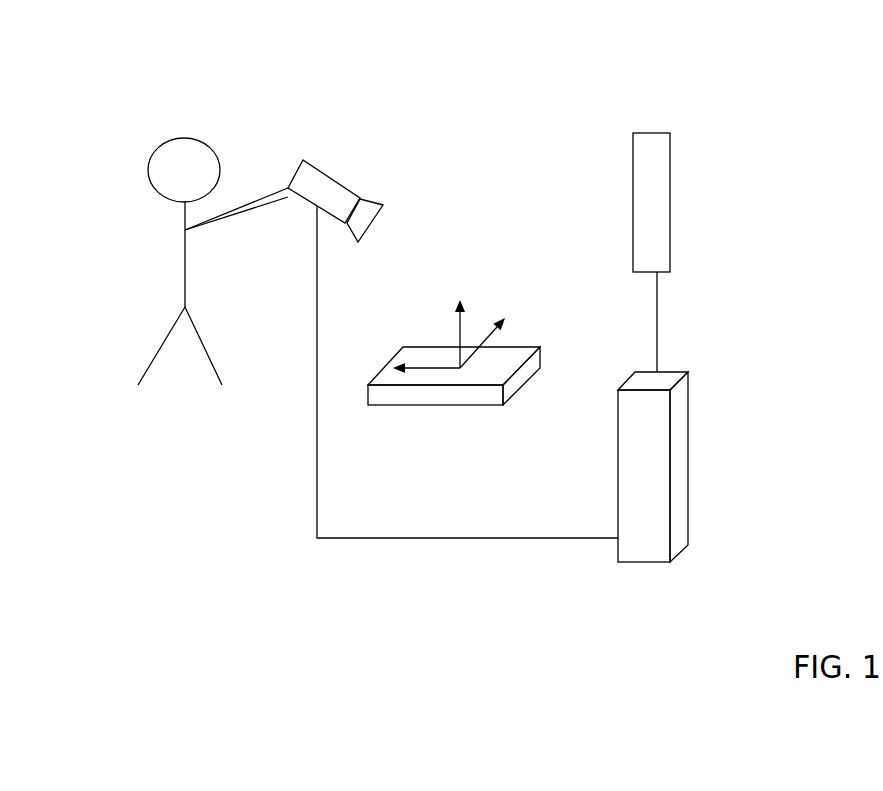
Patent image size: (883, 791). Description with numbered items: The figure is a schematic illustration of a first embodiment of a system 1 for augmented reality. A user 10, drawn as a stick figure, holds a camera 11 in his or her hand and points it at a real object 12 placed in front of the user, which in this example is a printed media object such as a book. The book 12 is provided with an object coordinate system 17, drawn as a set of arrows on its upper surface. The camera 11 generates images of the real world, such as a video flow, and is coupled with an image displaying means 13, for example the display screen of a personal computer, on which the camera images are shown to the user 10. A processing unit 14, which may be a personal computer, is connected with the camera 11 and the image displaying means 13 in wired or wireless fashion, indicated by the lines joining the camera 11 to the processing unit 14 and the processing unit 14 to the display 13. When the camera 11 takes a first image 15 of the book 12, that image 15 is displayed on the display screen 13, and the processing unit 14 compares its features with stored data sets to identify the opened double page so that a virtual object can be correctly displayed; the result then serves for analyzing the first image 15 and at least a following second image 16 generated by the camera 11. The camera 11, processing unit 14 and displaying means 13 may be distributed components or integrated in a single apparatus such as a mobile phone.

The system 1 is at (212, 55).
The user 10 is at (138, 190).
The camera 11 is at (346, 178).
The real object 12 is at (442, 405).
The image displaying means 13 is at (682, 153).
The processing unit 14 is at (695, 415).
The first image 15 is at (612, 177).
The second image 16 is at (612, 177).
The object coordinate system 17 is at (462, 302).